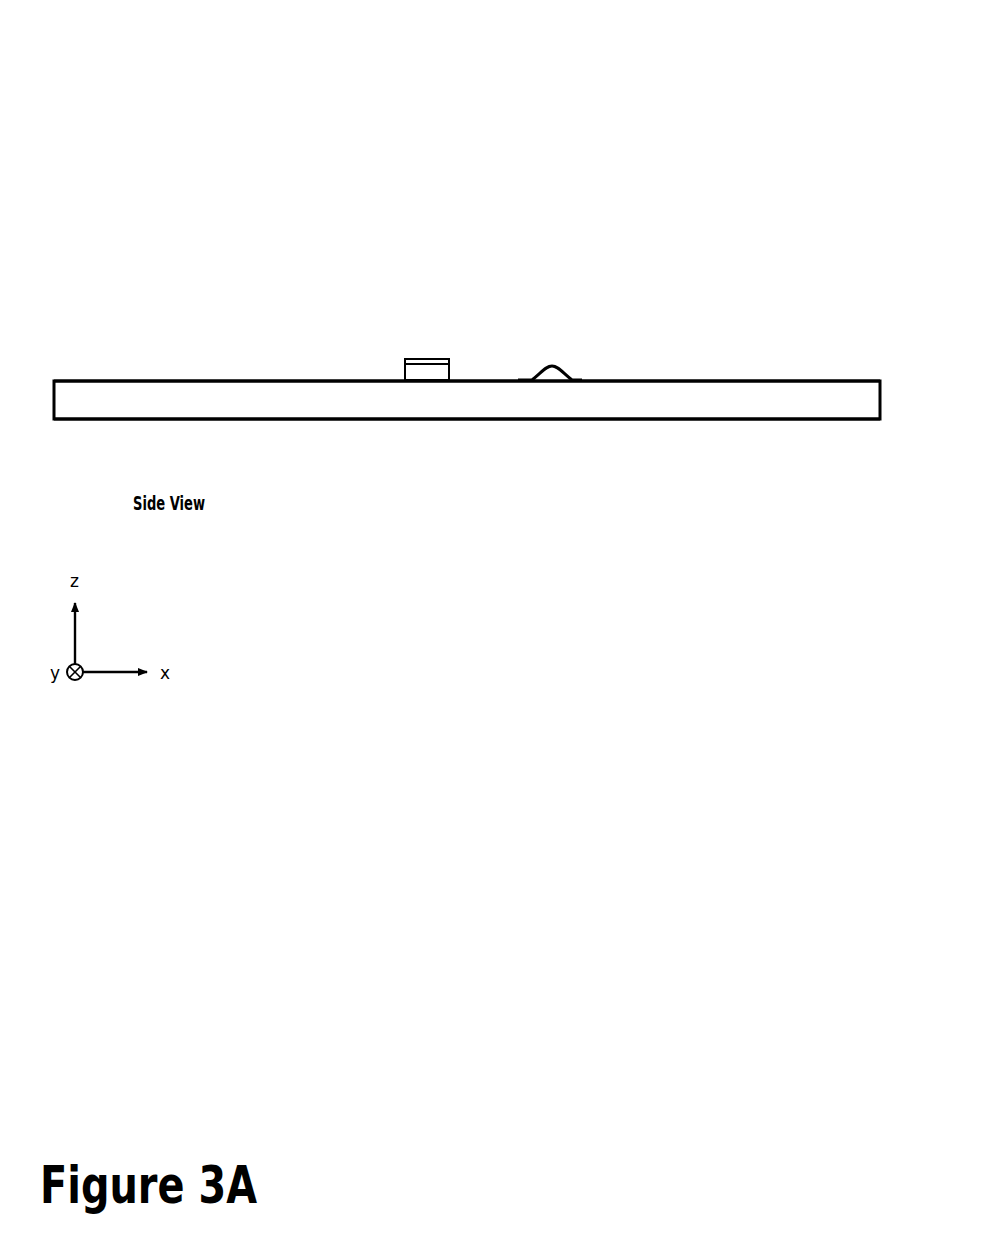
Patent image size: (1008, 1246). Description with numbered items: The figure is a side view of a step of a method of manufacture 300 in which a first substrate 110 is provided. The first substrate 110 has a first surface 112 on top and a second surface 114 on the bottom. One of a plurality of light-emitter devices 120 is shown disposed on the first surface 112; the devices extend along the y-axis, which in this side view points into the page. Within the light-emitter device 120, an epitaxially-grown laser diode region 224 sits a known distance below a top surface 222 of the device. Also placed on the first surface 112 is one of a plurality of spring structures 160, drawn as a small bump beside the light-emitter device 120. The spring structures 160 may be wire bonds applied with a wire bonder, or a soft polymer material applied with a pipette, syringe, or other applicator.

The step of a method of manufacture 300 is at (800, 80).
The first substrate 110 is at (113, 409).
The first surface 112 is at (317, 380).
The second surface 114 is at (243, 421).
The light-emitter devices 120 is at (402, 349).
The top surface 222 is at (413, 358).
The epitaxially-grown laser diode region 224 is at (450, 363).
The spring structures 160 is at (558, 366).